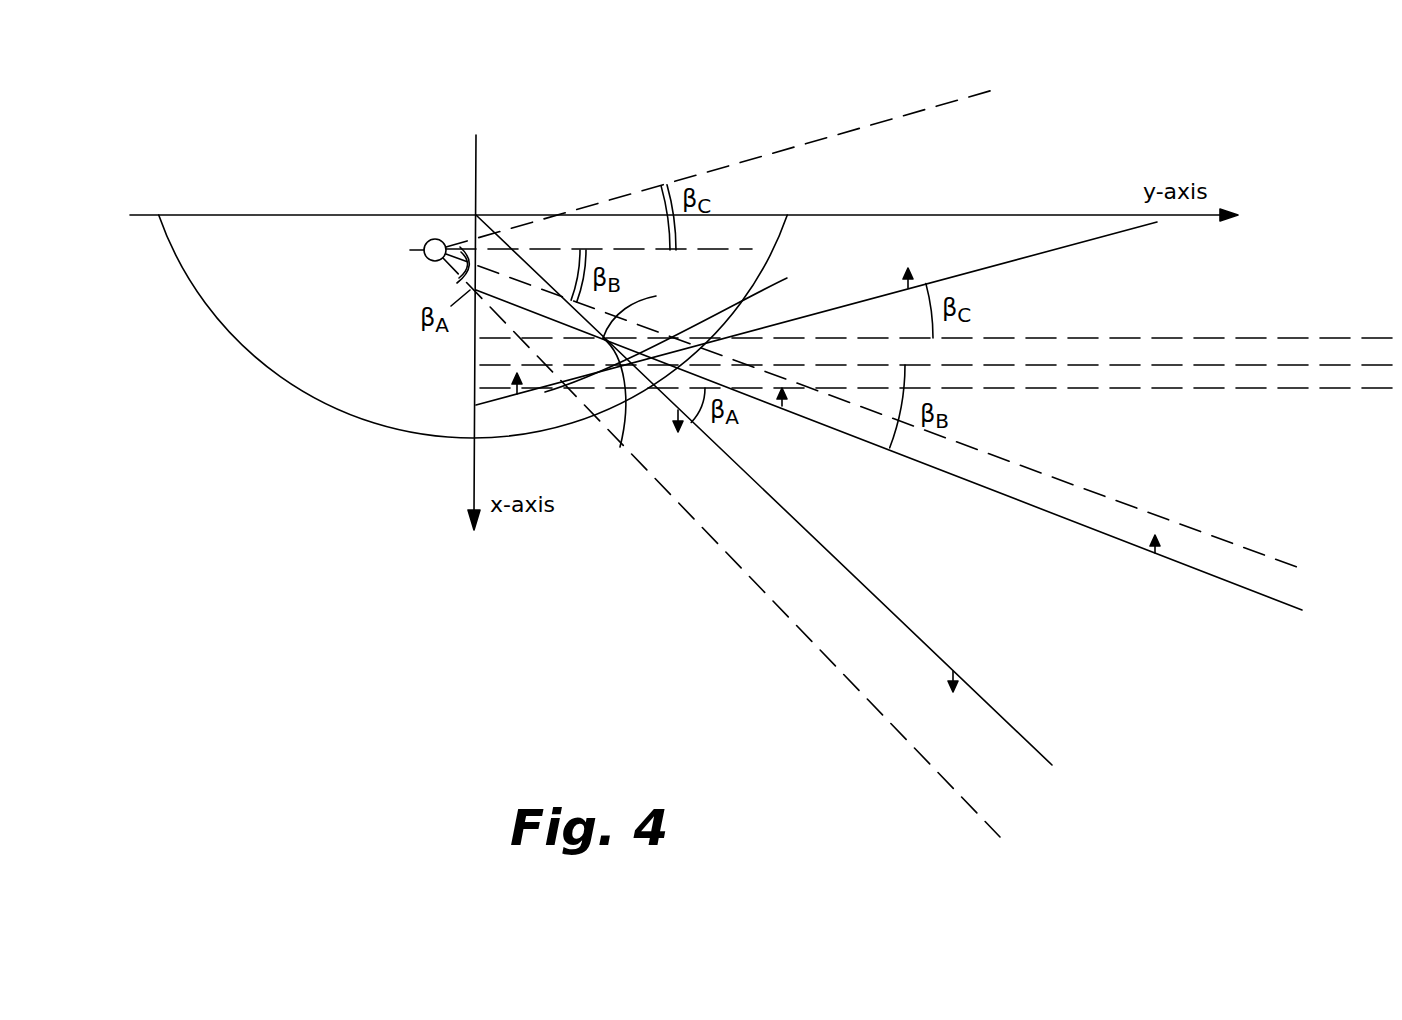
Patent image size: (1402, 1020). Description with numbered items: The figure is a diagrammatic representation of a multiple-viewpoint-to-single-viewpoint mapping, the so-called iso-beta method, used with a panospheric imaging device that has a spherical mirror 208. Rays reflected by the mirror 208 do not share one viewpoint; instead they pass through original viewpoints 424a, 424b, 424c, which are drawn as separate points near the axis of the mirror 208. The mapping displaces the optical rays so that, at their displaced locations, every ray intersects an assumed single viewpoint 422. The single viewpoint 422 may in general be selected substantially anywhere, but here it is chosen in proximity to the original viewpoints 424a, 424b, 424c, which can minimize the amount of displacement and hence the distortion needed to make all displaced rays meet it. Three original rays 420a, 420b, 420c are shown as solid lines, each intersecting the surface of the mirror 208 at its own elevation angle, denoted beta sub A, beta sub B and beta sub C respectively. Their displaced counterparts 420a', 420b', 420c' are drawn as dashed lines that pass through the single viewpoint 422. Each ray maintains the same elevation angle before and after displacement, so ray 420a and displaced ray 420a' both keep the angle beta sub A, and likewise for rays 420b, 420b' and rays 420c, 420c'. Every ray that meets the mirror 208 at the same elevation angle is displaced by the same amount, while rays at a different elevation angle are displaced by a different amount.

The spherical mirror 208 is at (203, 300).
The single viewpoint 422 is at (423, 250).
The original viewpoint 424a is at (620, 447).
The original viewpoint 424b is at (693, 321).
The original viewpoint 424c is at (652, 304).
The optical ray 420a is at (792, 490).
The optical ray 420b is at (891, 469).
The optical ray 420c is at (822, 313).
The displaced optical ray 420a' is at (721, 547).
The displaced optical ray 420b' is at (875, 412).
The displaced optical ray 420c' is at (733, 167).